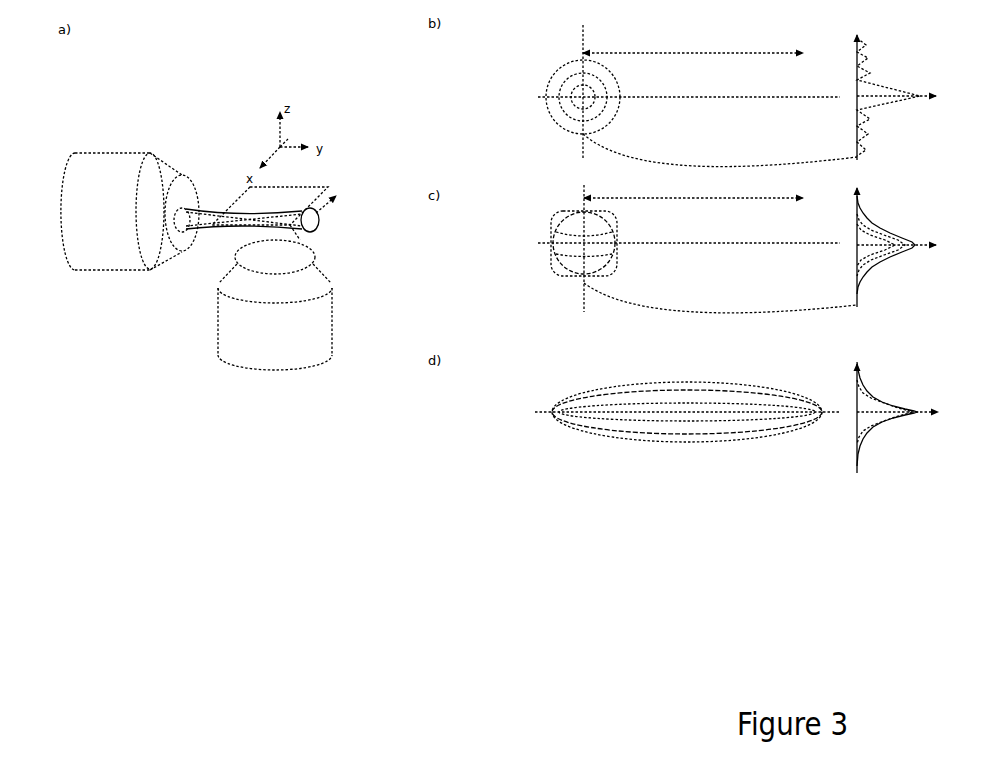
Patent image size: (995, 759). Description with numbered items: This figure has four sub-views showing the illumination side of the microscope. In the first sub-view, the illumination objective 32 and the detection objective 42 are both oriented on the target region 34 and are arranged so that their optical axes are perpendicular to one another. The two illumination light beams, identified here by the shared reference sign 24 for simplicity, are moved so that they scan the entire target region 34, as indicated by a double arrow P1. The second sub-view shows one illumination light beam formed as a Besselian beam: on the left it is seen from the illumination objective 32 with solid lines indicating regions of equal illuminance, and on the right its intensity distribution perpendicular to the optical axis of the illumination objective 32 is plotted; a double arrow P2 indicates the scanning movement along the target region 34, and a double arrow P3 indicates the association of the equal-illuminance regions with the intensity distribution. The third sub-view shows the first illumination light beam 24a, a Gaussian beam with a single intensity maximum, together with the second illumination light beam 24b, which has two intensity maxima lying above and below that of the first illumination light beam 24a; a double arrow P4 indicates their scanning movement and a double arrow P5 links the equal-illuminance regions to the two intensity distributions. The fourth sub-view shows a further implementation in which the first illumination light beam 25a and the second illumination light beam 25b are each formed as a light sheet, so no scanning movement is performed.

The illumination objective 32 is at (118, 272).
The target region 34 is at (331, 188).
The double arrow P1 is at (334, 212).
The illumination light beams 24 is at (318, 232).
The detection objective 42 is at (333, 322).
The double arrow P2 is at (618, 78).
The double arrow P3 is at (681, 162).
The first illumination light beam 24a is at (552, 242).
The second illumination light beam 24b is at (561, 218).
The double arrow P4 is at (668, 200).
The double arrow P5 is at (686, 311).
The first illumination light beam 25a is at (553, 410).
The second illumination light beam 25b is at (578, 388).